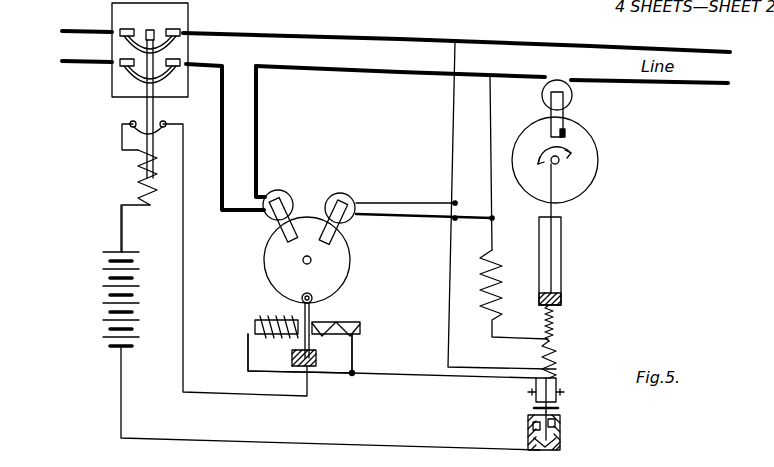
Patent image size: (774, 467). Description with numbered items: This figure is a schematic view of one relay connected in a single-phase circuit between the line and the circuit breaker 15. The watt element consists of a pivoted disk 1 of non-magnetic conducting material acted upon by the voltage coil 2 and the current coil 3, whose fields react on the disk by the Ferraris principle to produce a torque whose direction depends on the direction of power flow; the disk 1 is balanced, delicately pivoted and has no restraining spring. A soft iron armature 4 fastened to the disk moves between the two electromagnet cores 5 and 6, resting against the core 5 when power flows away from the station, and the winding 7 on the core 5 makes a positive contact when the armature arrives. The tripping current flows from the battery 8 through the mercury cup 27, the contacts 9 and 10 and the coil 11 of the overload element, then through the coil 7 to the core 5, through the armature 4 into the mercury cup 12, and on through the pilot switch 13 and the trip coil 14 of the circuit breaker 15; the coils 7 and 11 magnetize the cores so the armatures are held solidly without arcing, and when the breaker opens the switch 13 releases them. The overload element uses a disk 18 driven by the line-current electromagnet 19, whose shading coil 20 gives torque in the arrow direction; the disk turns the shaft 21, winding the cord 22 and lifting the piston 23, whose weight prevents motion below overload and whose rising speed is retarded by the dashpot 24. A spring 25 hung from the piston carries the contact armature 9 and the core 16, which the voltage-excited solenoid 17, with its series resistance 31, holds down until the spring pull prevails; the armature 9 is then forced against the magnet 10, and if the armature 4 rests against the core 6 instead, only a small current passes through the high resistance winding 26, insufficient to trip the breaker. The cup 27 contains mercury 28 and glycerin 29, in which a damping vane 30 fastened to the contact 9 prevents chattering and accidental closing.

The pivoted disk 1 is at (345, 262).
The voltage coil 2 is at (343, 198).
The current coil 3 is at (283, 195).
The soft iron armature 4 is at (303, 312).
The electromagnet core 5 is at (358, 326).
The electromagnet core 6 is at (260, 318).
The winding 7 is at (345, 321).
The battery 8 is at (108, 275).
The contact armature 9 is at (532, 410).
The contact 10 is at (556, 385).
The coil 11 is at (561, 394).
The mercury cup 12 is at (317, 358).
The pilot switch 13 is at (128, 121).
The trip coil 14 is at (138, 179).
The circuit breaker 15 is at (181, 15).
The core 16 is at (556, 346).
The solenoid 17 is at (545, 350).
The disk 18 is at (588, 152).
The electromagnet 19 is at (574, 95).
The shading coil 20 is at (566, 133).
The shaft 21 is at (560, 163).
The cord 22 is at (561, 210).
The piston 23 is at (562, 298).
The dashpot 24 is at (562, 246).
The spring 25 is at (554, 325).
The high resistance winding 26 is at (268, 336).
The mercury cup 27 is at (561, 446).
The mercury 28 is at (533, 441).
The glycerin 29 is at (556, 421).
The damping vane 30 is at (531, 426).
The series resistance 31 is at (504, 294).